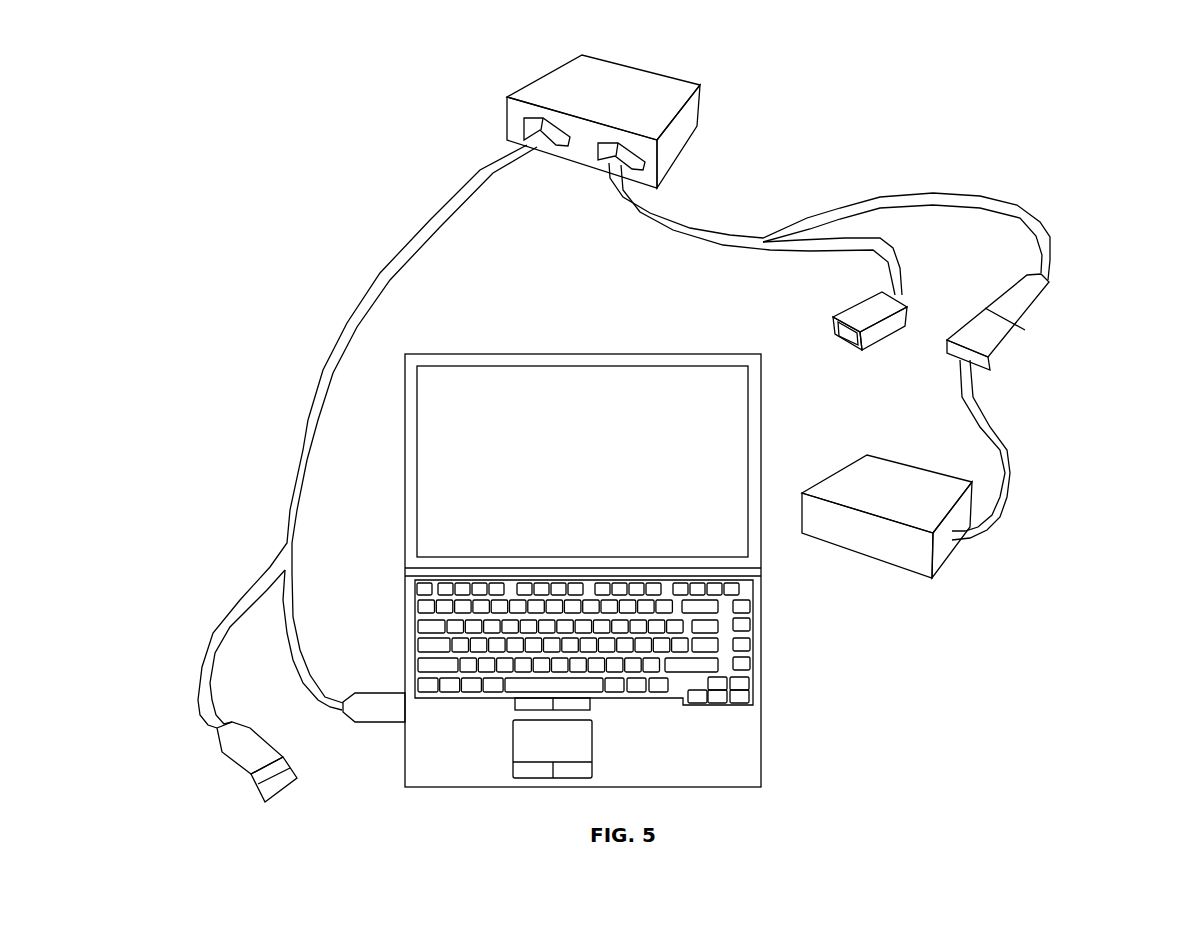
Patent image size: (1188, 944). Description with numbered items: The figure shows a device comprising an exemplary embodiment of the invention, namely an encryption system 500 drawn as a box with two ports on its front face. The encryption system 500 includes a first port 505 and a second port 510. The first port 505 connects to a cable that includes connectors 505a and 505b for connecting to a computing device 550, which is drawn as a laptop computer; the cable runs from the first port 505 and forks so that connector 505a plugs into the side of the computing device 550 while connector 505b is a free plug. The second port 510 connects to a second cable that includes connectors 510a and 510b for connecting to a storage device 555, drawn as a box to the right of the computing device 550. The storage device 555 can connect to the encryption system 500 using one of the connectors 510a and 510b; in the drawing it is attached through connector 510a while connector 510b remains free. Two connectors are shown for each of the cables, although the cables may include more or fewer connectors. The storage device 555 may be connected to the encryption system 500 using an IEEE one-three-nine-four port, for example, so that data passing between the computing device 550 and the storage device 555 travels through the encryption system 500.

The encryption system 500 is at (633, 112).
The first port 505 is at (523, 122).
The connector 505a is at (403, 703).
The connector 505b is at (268, 777).
The second port 510 is at (645, 162).
The connector 510a is at (1027, 300).
The connector 510b is at (867, 305).
The computing device 550 is at (758, 690).
The storage device 555 is at (908, 495).